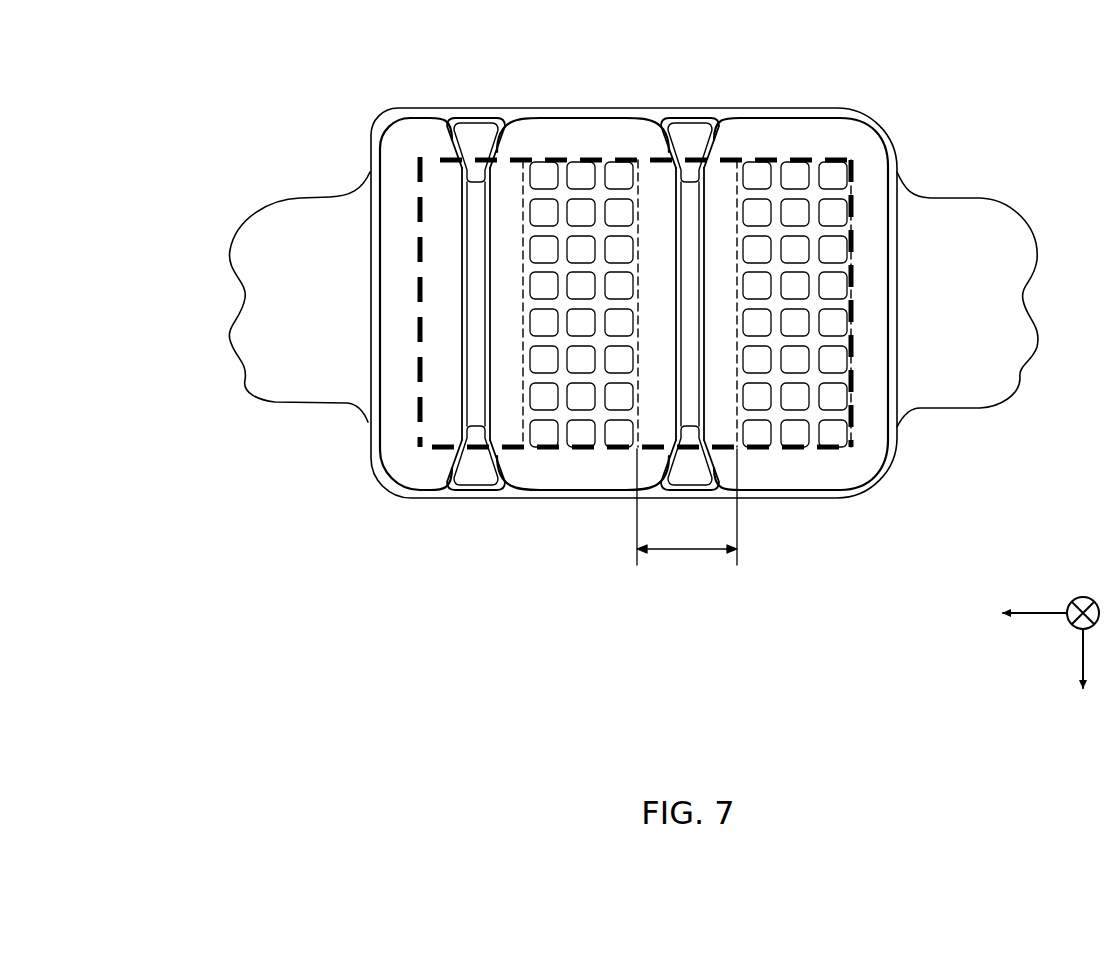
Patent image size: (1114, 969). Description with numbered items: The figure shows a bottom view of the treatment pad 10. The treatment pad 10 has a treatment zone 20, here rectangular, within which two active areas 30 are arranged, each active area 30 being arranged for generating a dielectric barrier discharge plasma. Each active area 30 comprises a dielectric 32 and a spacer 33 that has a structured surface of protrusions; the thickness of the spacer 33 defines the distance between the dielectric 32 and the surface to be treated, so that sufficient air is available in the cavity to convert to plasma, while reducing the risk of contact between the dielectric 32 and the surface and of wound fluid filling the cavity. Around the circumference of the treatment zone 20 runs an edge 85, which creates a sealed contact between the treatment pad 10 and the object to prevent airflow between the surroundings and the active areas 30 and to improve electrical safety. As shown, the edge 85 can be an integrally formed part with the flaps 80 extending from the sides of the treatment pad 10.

The treatment pad 10 is at (212, 68).
The treatment zone 20 is at (418, 157).
The active area 30 is at (521, 158).
The dielectric 32 is at (835, 433).
The spacer 33 is at (842, 378).
The flaps 80 is at (997, 242).
The edge 85 is at (588, 497).